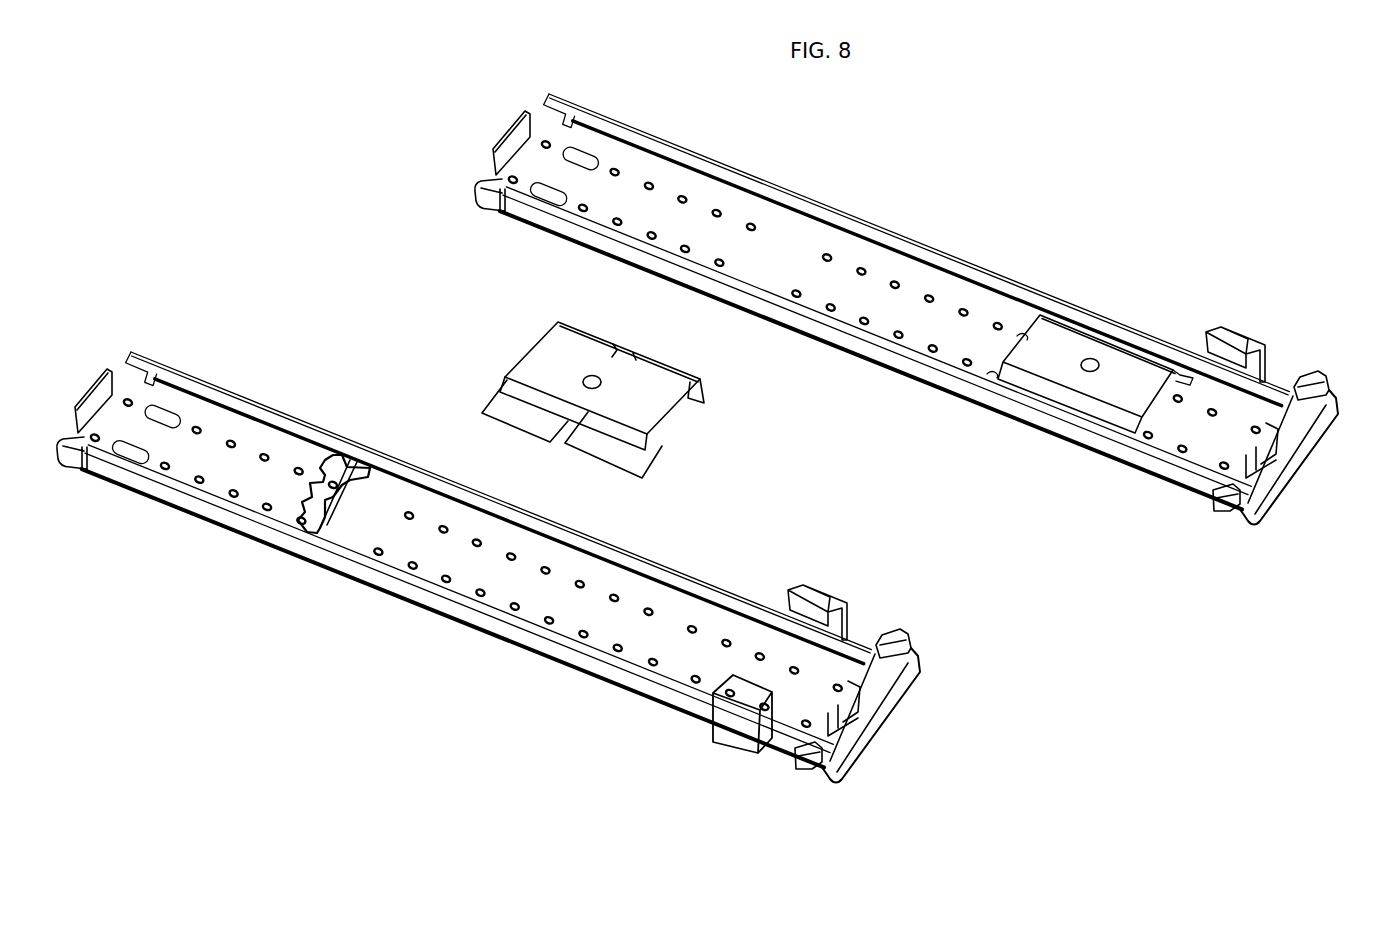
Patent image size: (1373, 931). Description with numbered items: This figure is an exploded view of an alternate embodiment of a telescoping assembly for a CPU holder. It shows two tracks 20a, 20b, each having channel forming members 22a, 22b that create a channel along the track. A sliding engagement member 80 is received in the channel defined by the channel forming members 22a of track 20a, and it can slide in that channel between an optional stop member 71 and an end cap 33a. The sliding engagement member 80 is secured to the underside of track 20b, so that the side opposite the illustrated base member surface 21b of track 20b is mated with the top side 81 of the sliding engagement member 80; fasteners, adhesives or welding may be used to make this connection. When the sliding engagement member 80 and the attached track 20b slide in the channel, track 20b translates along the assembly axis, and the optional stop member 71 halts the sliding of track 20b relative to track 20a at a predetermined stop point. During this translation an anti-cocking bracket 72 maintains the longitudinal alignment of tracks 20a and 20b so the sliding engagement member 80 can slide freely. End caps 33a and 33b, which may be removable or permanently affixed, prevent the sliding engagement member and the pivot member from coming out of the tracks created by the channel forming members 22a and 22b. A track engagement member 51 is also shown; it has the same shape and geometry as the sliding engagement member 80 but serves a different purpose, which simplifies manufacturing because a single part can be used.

The track 20a is at (348, 582).
The track 20b is at (752, 163).
The base member surface 21b is at (600, 192).
The channel forming members 22a is at (578, 545).
The channel forming members 22b is at (852, 332).
The end cap 33a is at (885, 718).
The end cap 33b is at (1274, 486).
The track engagement member 51 is at (1124, 376).
The optional stop member 71 is at (334, 462).
The anti-cocking bracket 72 is at (733, 737).
The sliding engagement member 80 is at (632, 432).
The top side 81 is at (551, 362).